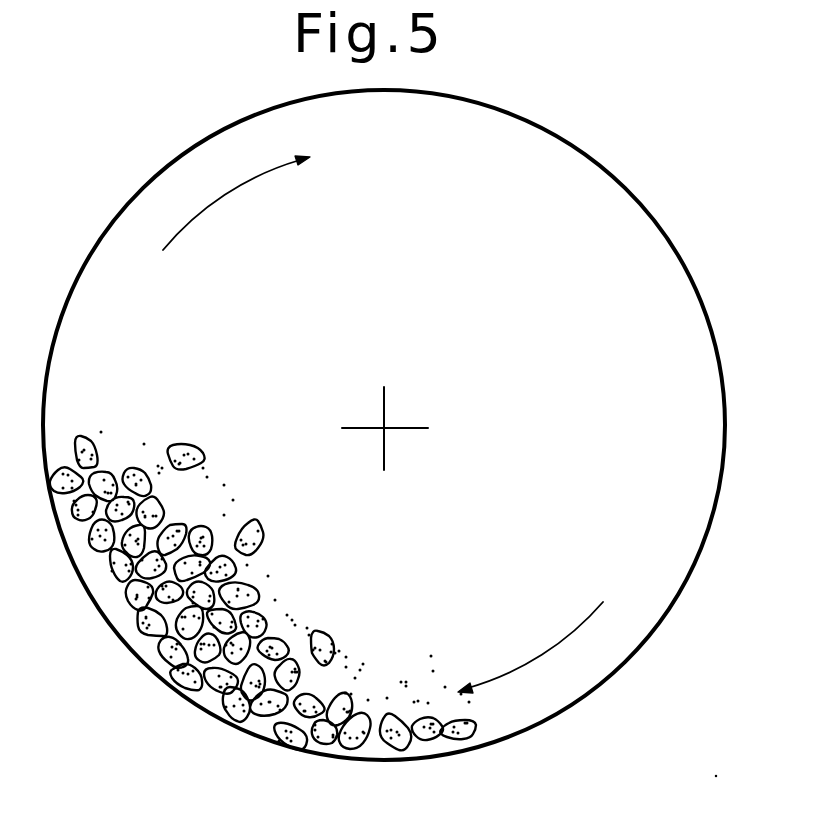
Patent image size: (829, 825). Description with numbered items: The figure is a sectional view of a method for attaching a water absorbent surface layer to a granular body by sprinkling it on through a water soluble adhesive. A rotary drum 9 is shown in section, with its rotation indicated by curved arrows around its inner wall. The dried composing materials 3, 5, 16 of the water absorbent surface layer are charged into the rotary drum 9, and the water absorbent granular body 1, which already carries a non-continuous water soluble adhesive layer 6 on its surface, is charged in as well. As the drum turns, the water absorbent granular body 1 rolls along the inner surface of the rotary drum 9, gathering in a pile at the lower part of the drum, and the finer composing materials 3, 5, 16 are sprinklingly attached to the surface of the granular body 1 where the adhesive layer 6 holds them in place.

The water absorbent granular body 1 is at (119, 452).
The composing material of the water absorbent surface layer 3 is at (342, 690).
The composing material of the water absorbent surface layer 5 is at (390, 695).
The non-continuous water soluble adhesive layer 6 is at (270, 650).
The rotary drum 9 is at (598, 160).
The composing material of the water absorbent surface layer 16 is at (190, 503).